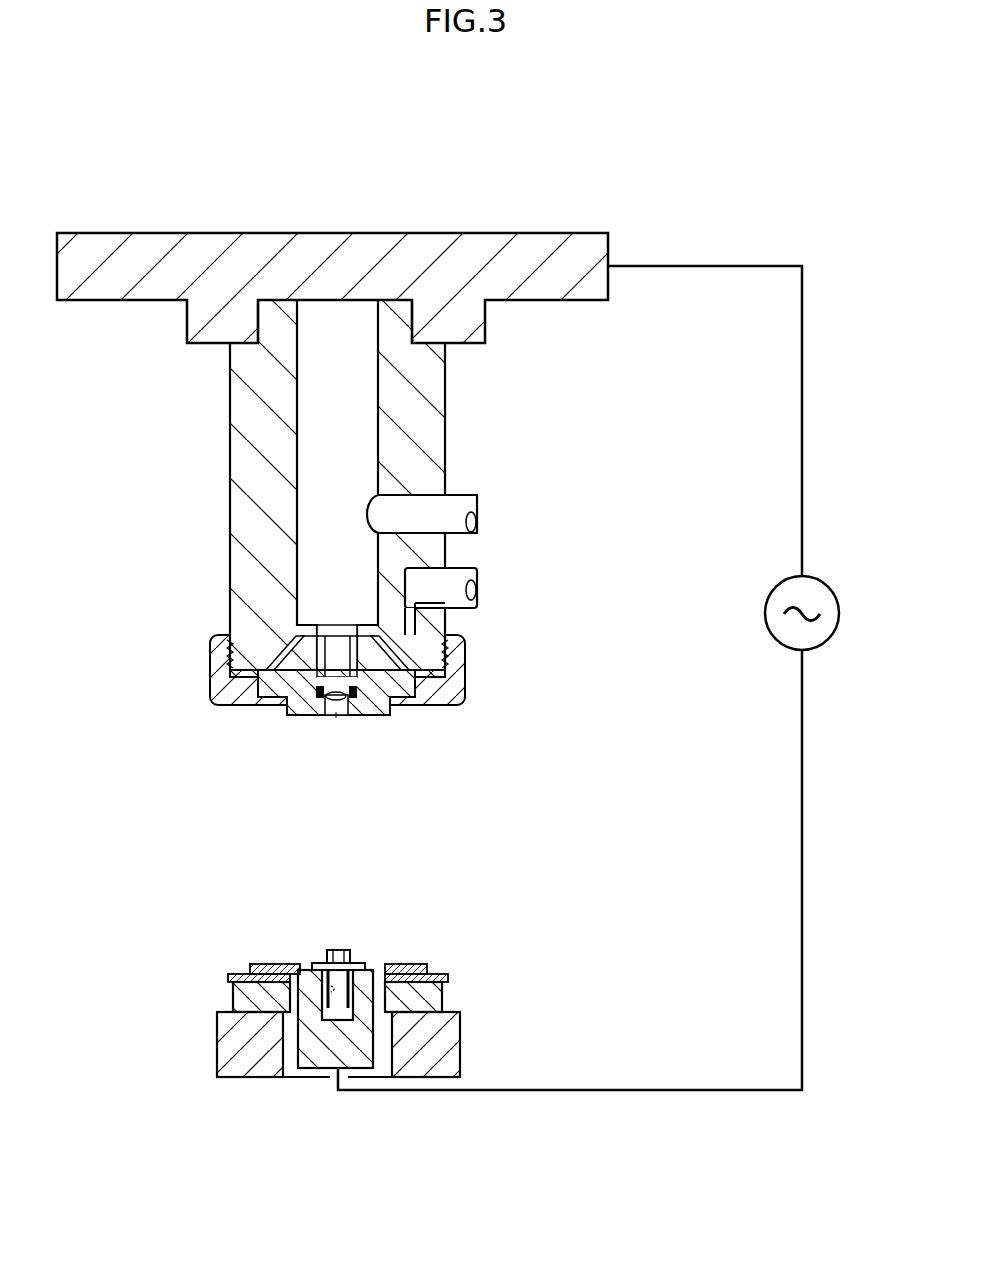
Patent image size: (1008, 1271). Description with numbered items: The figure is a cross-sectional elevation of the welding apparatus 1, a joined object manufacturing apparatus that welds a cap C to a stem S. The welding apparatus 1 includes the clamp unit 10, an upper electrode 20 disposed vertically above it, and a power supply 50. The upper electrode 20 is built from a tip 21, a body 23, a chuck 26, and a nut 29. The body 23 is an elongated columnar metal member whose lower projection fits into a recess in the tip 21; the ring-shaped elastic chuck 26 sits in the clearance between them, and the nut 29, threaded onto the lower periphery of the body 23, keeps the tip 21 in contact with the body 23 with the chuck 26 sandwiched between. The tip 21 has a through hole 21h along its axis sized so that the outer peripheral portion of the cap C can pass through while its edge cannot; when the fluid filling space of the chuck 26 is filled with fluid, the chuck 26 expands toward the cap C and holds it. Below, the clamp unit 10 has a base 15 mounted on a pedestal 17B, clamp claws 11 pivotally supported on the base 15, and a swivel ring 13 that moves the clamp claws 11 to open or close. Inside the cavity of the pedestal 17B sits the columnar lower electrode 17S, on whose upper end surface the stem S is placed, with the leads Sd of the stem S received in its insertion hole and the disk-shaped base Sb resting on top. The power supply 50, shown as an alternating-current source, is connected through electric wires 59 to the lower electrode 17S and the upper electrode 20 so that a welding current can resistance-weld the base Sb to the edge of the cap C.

The welding apparatus 1 is at (108, 164).
The upper electrode 20 is at (122, 533).
The body 23 is at (230, 600).
The nut 29 is at (224, 706).
The tip 21 is at (337, 738).
The chuck 26 is at (321, 702).
The through hole 21h is at (334, 717).
The cap C is at (350, 712).
The electric wires 59 is at (803, 541).
The power supply 50 is at (838, 612).
The clamp unit 10 is at (190, 958).
The stem S is at (329, 933).
The base Sb is at (321, 962).
The leads Sd is at (299, 968).
The clamp claws 11 is at (410, 963).
The swivel ring 13 is at (442, 973).
The base 15 is at (445, 995).
The lower electrode 17S is at (375, 1040).
The pedestal 17B is at (462, 1052).